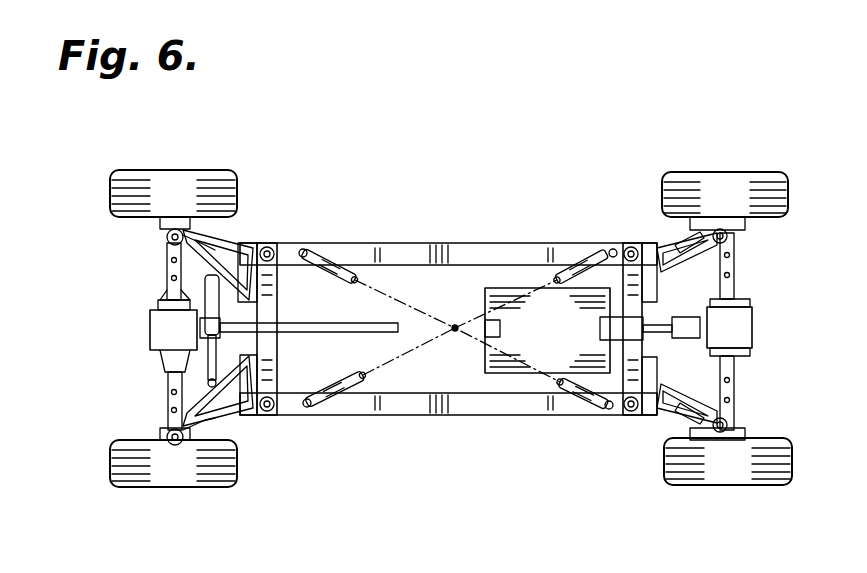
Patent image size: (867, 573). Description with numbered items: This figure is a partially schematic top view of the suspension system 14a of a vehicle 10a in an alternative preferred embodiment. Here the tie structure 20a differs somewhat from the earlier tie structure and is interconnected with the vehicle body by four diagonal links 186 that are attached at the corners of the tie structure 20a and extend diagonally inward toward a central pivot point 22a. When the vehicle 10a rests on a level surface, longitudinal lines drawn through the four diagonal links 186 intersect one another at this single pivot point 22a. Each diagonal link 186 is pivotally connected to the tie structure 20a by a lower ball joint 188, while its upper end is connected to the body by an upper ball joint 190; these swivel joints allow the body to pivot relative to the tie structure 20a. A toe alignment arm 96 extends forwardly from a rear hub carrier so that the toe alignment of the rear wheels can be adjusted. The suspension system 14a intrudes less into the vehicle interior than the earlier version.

The vehicle 10a is at (765, 305).
The suspension system 14a is at (250, 432).
The tie structure 20a is at (273, 432).
The central pivot point 22a is at (455, 325).
The toe alignment arm 96 is at (695, 432).
The diagonal link 186 is at (338, 243).
The lower ball joint 188 is at (308, 245).
The upper ball joint 190 is at (375, 243).